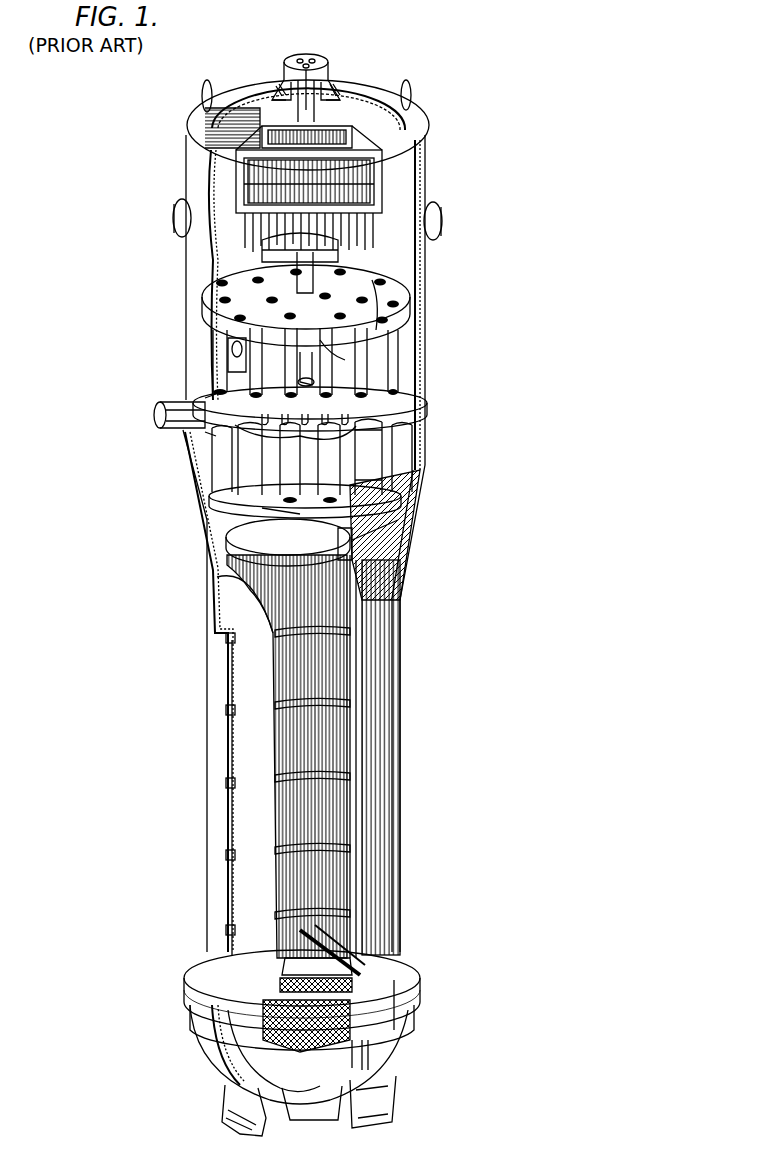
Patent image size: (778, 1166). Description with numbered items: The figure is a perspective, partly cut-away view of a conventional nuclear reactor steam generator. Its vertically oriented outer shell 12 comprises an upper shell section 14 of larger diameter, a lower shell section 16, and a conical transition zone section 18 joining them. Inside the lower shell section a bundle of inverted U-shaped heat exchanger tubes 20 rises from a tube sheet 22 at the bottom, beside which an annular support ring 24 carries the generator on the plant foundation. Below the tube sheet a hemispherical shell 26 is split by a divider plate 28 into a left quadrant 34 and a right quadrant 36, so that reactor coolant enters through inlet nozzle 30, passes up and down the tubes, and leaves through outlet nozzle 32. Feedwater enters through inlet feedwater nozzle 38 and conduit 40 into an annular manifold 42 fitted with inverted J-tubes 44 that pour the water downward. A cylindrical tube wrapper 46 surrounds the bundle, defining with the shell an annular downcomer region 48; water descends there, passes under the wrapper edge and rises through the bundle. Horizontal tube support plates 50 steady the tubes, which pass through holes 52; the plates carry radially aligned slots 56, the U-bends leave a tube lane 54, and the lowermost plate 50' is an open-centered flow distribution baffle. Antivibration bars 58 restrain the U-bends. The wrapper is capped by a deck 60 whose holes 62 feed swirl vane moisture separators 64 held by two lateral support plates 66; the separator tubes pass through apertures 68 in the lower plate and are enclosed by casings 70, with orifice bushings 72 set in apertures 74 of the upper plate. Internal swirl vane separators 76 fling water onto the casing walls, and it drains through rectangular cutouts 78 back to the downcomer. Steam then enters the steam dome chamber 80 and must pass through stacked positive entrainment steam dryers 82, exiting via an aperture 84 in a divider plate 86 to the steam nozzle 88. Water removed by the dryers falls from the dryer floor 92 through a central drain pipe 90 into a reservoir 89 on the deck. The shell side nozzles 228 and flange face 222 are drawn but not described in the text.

The pressure vessel or outer shell 12 is at (418, 402).
The upper shell section 14 is at (402, 325).
The lower shell section 16 is at (385, 712).
The transition zone section 18 is at (405, 502).
The heat exchanger tubes 20 is at (300, 740).
The tube sheet 22 is at (318, 1038).
The annular support ring 24 is at (405, 975).
The hemispherically shaped shell portion 26 is at (225, 1057).
The divider plate 28 is at (330, 1104).
The inlet nozzle 30 is at (248, 1122).
The outlet nozzle 32 is at (380, 1104).
The left hemispherical shell quadrant 34 is at (260, 1078).
The right hemispherical shell quadrant 36 is at (368, 1067).
The inlet feedwater nozzle 38 is at (166, 400).
The water conduit 40 is at (170, 418).
The annular manifold 42 is at (372, 440).
The inverted J-tubes or nozzles 44 is at (262, 470).
The tube wrapper 46 is at (253, 727).
The annular downcomer region 48 is at (250, 875).
The tube support plates 50 is at (341, 742).
The lowermost support plate 50' is at (291, 975).
The apertures or holes 52 is at (310, 962).
The tube lane 54 is at (375, 548).
The radially aligned slots 56 is at (360, 942).
The antivibration bars 58 is at (396, 524).
The deck or cover 60 is at (245, 492).
The holes or bores 62 is at (302, 560).
The swirl vane primary moisture separators 64 is at (246, 360).
The lateral support plates 66 is at (372, 280).
The apertures 68 is at (300, 362).
The outer cylindrical casings 70 is at (250, 382).
The orifice bushings 72 is at (215, 300).
The apertures 74 is at (307, 307).
The swirl vane separators 76 is at (232, 342).
The rectangular cutouts or apertures 78 is at (260, 415).
The steam dome chamber 80 is at (400, 208).
The positive entrainment steam dryers 82 is at (383, 178).
The cut-out or aperture 84 is at (352, 125).
The divider plate 86 is at (220, 128).
The steam nozzle 88 is at (322, 58).
The pool or reservoir 89 is at (280, 512).
The drain pipe 90 is at (262, 275).
The floor 92 is at (262, 243).
The flange side face 222 is at (418, 1012).
The vessel nozzles 228 is at (175, 224).